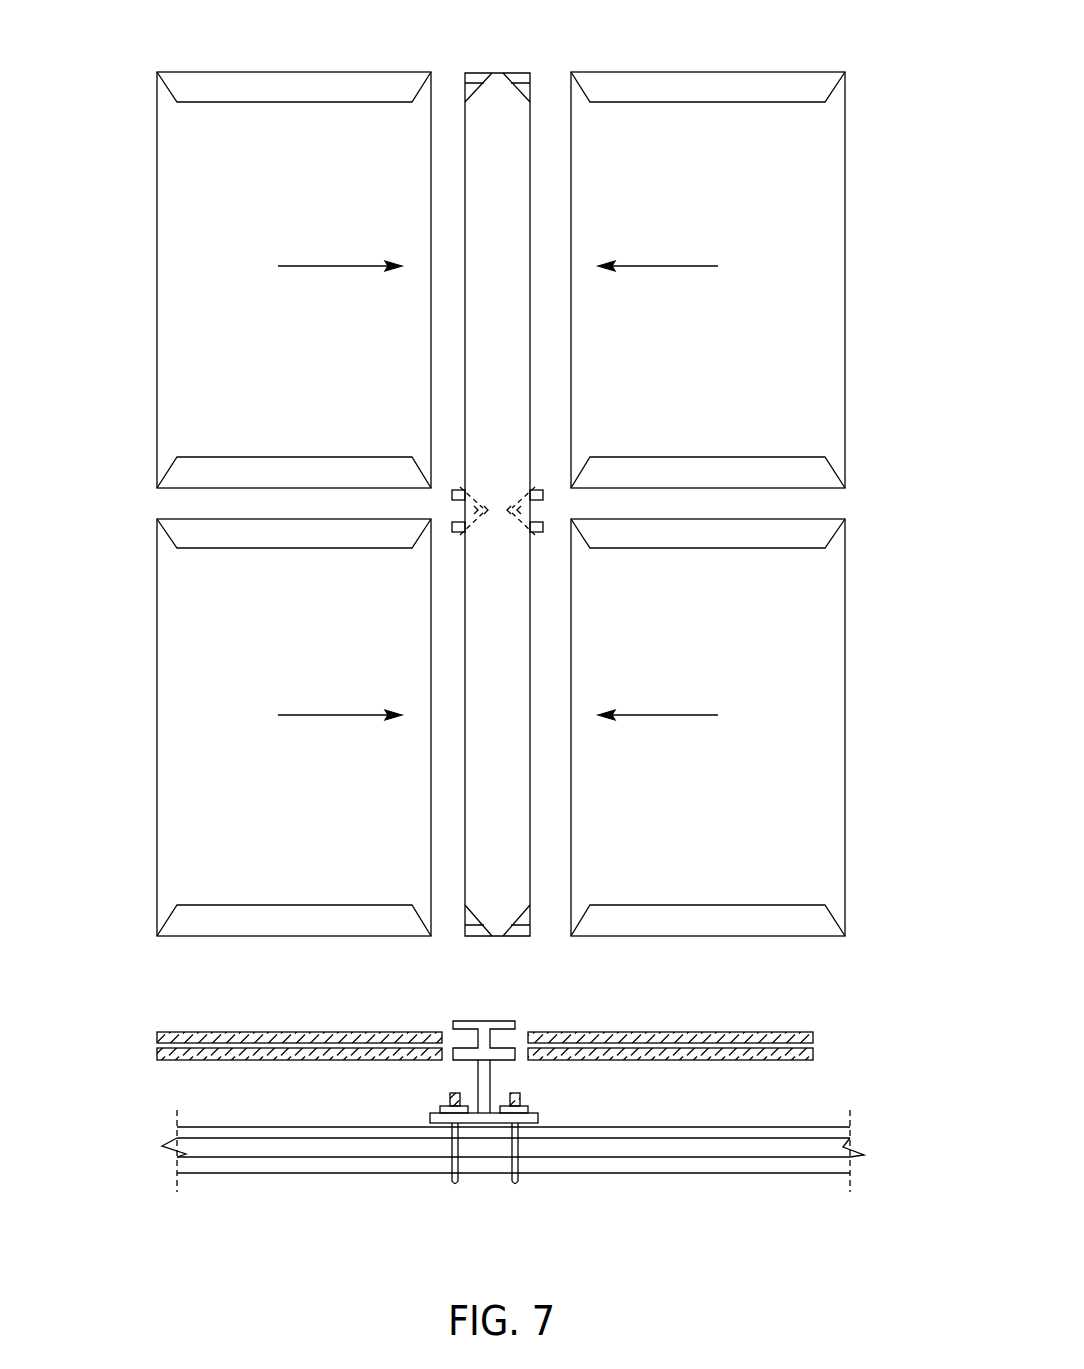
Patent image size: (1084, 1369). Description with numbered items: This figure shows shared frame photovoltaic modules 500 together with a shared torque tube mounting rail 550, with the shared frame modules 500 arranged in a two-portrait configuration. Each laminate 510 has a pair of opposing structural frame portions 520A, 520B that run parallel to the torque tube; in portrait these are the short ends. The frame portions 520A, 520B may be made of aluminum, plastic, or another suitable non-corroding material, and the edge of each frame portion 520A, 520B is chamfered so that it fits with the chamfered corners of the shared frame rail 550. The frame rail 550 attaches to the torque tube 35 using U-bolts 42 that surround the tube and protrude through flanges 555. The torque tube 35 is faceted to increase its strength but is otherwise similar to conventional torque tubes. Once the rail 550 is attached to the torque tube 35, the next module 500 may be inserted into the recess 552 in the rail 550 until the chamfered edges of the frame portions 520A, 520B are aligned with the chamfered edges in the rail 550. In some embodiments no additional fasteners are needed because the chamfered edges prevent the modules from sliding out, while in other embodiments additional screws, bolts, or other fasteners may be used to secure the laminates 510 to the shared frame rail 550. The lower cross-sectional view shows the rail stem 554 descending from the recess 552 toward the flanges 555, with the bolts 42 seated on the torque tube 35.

The shared frame photovoltaic module 500 is at (134, 140).
The laminate 510 is at (300, 178).
The structural frame portion 520A is at (258, 80).
The structural frame portion 520B is at (165, 478).
The shared torque tube mounting rail 550 is at (519, 355).
The recess 552 is at (515, 1033).
The stem of joint member 554 is at (492, 1072).
The flange 555 is at (430, 1118).
The U-bolt 42 is at (455, 1188).
The torque tube 35 is at (752, 1175).